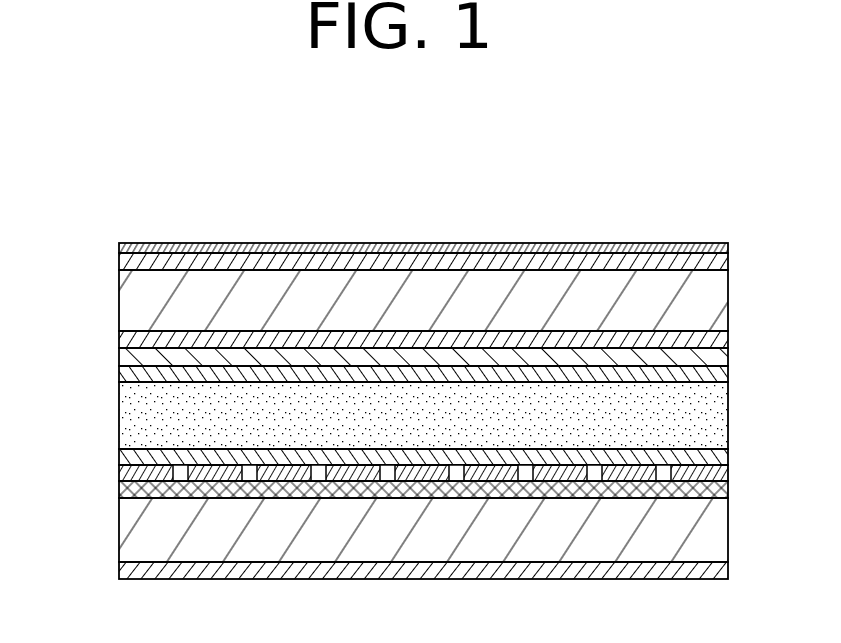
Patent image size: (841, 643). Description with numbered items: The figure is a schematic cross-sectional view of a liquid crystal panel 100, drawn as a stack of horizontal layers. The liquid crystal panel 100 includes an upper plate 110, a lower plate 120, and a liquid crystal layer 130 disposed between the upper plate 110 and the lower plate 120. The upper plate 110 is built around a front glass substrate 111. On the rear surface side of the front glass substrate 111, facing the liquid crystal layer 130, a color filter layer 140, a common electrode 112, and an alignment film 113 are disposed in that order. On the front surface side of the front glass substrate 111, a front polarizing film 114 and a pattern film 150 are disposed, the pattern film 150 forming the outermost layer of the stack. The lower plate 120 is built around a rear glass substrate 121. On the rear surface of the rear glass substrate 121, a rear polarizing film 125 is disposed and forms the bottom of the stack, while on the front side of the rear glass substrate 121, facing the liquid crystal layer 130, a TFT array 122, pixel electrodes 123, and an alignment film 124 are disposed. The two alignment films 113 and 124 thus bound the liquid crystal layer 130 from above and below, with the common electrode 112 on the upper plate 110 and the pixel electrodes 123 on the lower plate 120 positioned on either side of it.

The liquid crystal panel 100 is at (446, 173).
The upper plate 110 is at (106, 243).
The front glass substrate 111 is at (719, 298).
The common electrode 112 is at (719, 357).
The alignment film 113 is at (719, 374).
The front polarizing film 114 is at (719, 262).
The lower plate 120 is at (106, 449).
The rear glass substrate 121 is at (719, 545).
The TFT array 122 is at (719, 490).
The pixel electrodes 123 is at (719, 473).
The alignment film 124 is at (719, 458).
The rear polarizing film 125 is at (719, 570).
The liquid crystal layer 130 is at (119, 415).
The color filter layer 140 is at (719, 340).
The pattern film 150 is at (722, 248).